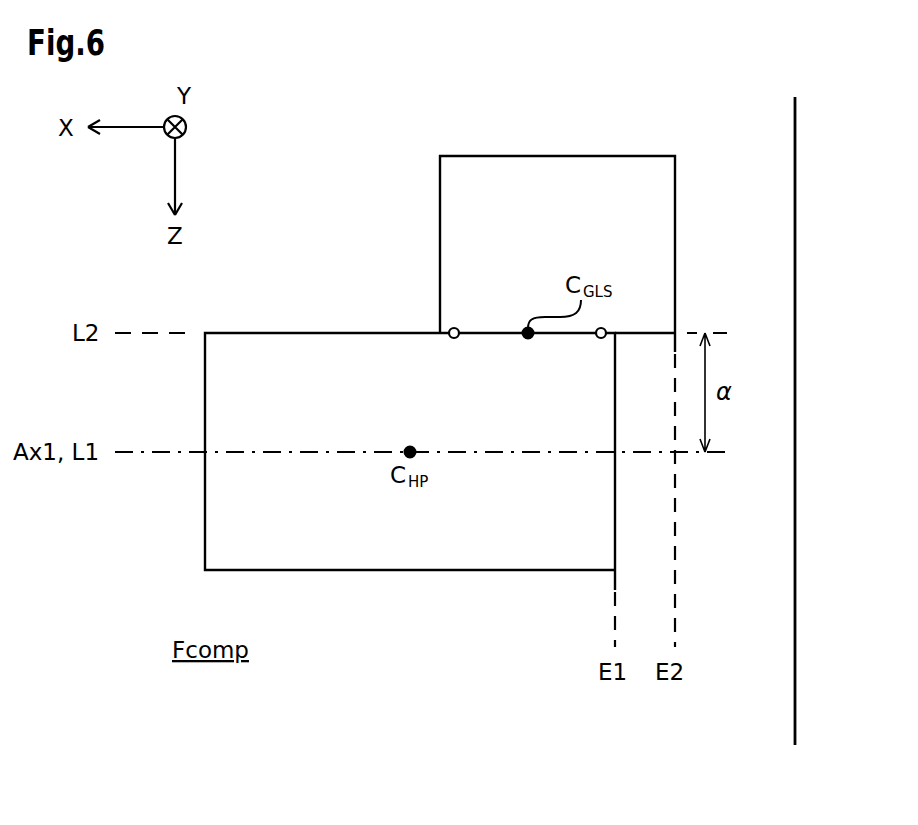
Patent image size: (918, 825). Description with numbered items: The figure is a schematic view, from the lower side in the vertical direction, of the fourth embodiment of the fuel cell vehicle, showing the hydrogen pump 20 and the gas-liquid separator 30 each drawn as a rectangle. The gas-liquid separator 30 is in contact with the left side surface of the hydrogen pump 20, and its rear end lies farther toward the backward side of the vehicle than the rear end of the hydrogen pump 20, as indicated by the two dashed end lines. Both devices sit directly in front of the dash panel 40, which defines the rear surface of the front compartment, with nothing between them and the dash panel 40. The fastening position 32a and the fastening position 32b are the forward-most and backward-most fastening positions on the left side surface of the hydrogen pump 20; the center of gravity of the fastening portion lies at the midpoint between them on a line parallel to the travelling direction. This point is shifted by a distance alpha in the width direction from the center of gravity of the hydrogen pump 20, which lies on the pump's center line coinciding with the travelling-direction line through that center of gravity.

The hydrogen pump 20 is at (265, 333).
The gas-liquid separator 30 is at (675, 210).
The fastening position 32a is at (454, 328).
The fastening position 32b is at (600, 338).
The dash panel 40 is at (820, 421).